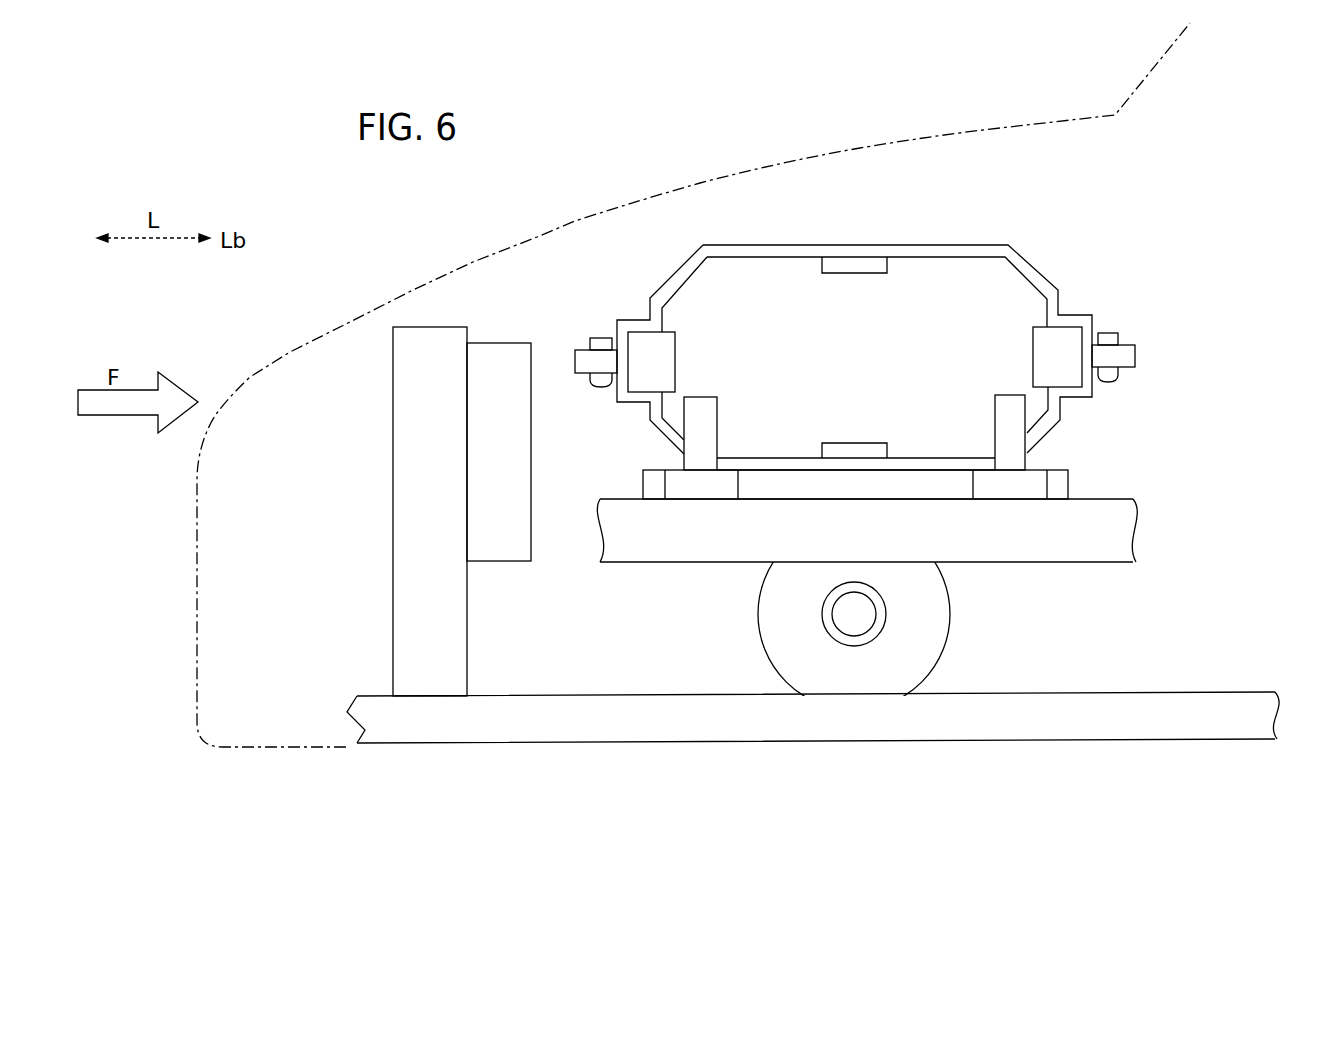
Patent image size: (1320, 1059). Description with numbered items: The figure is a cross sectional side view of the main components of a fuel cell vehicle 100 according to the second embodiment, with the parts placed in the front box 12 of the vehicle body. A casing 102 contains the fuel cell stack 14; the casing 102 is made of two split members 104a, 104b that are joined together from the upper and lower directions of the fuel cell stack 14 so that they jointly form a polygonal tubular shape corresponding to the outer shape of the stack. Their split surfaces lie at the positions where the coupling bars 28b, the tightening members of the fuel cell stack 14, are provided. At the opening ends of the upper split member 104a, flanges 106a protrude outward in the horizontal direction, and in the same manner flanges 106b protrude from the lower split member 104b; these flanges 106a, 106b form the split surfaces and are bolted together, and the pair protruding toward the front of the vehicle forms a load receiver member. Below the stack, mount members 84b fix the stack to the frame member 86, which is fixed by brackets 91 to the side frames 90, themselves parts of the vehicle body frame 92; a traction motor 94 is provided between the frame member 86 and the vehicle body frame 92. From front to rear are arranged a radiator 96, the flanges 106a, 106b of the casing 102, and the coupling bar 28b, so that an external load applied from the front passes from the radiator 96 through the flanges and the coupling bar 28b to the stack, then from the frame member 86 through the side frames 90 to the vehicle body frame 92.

The front box 12 is at (878, 170).
The fuel cell stack 14 is at (985, 280).
The coupling bar 28b is at (665, 352).
The mount member 84b is at (700, 415).
The frame member 86 is at (907, 485).
The side frame 90 is at (1095, 548).
The bracket 91 is at (698, 487).
The vehicle body frame 92 is at (592, 712).
The traction motor 94 is at (940, 615).
The radiator 96 is at (412, 467).
The fuel cell vehicle 100 is at (436, 217).
The casing 102 is at (811, 244).
The split member 104a is at (769, 244).
The split member 104b is at (668, 440).
The flange 106a is at (584, 348).
The flange 106b is at (582, 378).